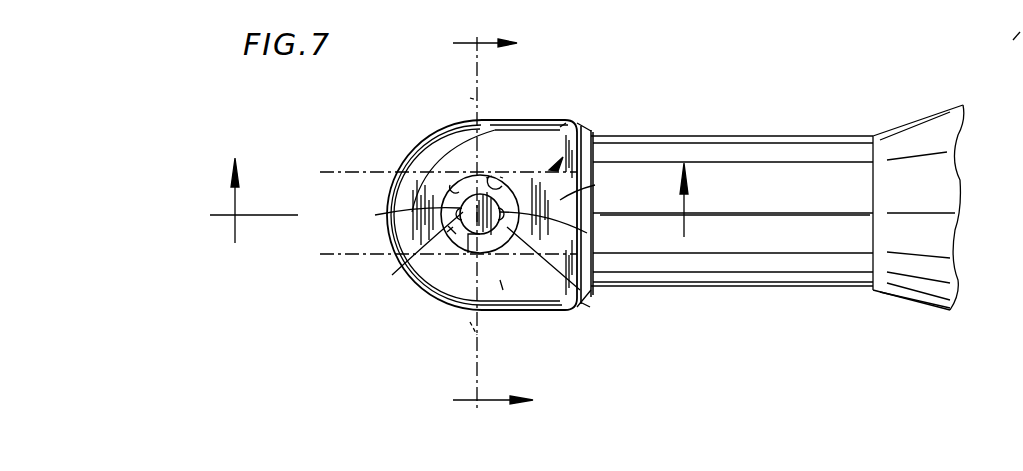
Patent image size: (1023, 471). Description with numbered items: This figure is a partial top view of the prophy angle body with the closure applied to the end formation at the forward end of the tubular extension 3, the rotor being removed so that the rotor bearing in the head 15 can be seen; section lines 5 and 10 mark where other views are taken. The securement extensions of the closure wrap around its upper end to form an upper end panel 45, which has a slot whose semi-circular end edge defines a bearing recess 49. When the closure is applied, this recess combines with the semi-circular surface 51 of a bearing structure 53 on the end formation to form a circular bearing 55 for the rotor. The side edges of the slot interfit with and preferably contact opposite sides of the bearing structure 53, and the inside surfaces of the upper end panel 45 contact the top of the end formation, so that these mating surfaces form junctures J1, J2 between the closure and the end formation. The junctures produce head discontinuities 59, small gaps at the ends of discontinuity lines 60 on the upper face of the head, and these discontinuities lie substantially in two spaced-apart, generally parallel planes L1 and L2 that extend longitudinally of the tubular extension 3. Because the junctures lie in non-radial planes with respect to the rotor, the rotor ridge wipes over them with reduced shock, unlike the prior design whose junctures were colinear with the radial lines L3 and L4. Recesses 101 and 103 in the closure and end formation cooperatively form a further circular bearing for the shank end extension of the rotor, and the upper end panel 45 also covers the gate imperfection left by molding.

The tubular extension 3 is at (800, 136).
The section line 5 is at (531, 207).
The section line 10 is at (483, 222).
The head housing 15 is at (434, 302).
The upper end panel 45 is at (530, 173).
The bearing recess 49 is at (453, 172).
The semi-circular surface 51 is at (490, 177).
The bearing structure 53 is at (580, 190).
The circular bearing 55 is at (415, 270).
The head discontinuities 59 is at (500, 177).
The discontinuity lines 60 is at (560, 127).
The recess 101 is at (393, 214).
The recess 103 is at (587, 233).
The juncture J1 is at (585, 305).
The juncture J2 is at (622, 134).
The plane L1 is at (320, 172).
The plane L2 is at (320, 254).
The line L3 is at (470, 325).
The line L4 is at (470, 98).